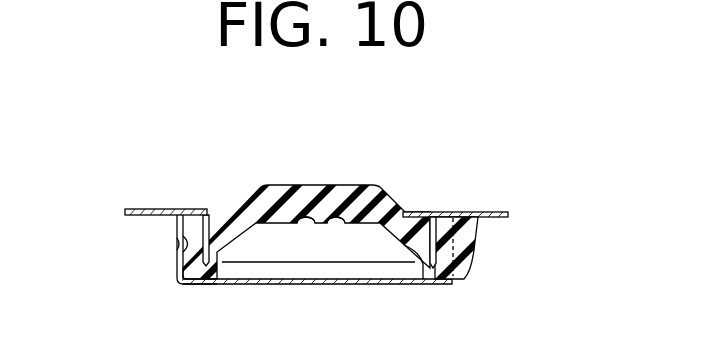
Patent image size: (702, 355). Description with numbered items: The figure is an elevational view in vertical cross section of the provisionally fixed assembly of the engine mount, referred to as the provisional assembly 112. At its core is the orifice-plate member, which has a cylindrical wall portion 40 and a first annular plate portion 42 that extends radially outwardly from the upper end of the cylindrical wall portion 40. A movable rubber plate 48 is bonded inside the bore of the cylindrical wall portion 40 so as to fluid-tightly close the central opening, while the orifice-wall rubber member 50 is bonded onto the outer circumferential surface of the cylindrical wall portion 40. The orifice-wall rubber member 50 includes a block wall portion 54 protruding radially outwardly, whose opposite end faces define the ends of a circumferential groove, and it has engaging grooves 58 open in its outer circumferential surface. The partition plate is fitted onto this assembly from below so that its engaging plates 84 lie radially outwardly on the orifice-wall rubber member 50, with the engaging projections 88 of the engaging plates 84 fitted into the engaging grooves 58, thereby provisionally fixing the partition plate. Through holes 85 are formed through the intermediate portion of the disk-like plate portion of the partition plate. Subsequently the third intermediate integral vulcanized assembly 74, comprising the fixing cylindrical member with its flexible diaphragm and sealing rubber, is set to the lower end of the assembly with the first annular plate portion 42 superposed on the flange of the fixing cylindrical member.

The cylindrical wall portion 40 is at (430, 233).
The first annular plate portion 42 is at (141, 209).
The movable rubber plate 48 is at (326, 190).
The orifice-wall rubber member 50 is at (182, 285).
The block wall portion 54 is at (457, 273).
The engaging groove 58 is at (180, 250).
The third intermediate integral vulcanized assembly 74 is at (468, 288).
The engaging plate 84 is at (188, 213).
The through hole 85 is at (243, 285).
The engaging projection 88 is at (180, 238).
The provisional assembly 112 is at (312, 184).